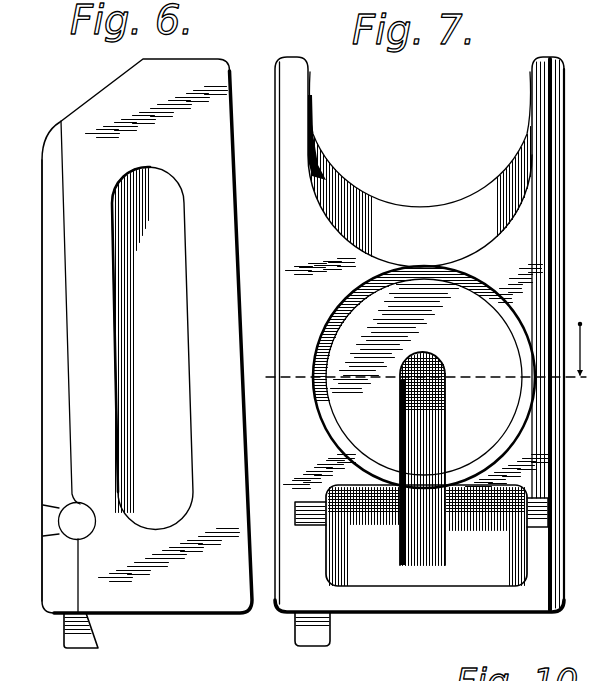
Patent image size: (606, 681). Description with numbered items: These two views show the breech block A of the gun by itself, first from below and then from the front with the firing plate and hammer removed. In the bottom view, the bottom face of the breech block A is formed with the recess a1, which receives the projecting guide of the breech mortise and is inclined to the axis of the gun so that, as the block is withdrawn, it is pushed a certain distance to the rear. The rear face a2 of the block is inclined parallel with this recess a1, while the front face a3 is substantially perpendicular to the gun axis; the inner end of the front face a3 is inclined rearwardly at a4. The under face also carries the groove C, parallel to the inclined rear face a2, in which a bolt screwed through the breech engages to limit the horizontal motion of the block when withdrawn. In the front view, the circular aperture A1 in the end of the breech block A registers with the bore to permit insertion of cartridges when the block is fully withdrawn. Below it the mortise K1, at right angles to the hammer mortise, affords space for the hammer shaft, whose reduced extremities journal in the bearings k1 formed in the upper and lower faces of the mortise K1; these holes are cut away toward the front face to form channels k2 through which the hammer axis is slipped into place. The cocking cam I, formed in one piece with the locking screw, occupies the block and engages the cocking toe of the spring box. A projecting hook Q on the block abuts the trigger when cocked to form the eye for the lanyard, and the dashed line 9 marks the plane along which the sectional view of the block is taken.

In FIG. 6, the breech block A is at (147, 336).
In FIG. 7, the breech block A is at (419, 334).
In FIG. 7, the circular aperture A1 is at (419, 164).
In FIG. 6, the recess a1 is at (62, 367).
In FIG. 6, the rear face a2 is at (240, 306).
In FIG. 7, the rear face a2 is at (553, 530).
In FIG. 6, the front face a3 is at (42, 313).
In FIG. 7, the front face a3 is at (523, 255).
In FIG. 7, the rearwardly inclined portion a4 is at (420, 224).
In FIG. 6, the groove C is at (152, 348).
In FIG. 7, the cocking cam I is at (484, 351).
In FIG. 7, the mortise K1 is at (426, 535).
In FIG. 6, the bearings k1 is at (88, 534).
In FIG. 7, the bearings k1 is at (316, 524).
In FIG. 6, the channels k2 is at (58, 521).
In FIG. 6, the projecting hook Q is at (99, 646).
In FIG. 7, the projecting hook Q is at (314, 645).
In FIG. 7, the section line 9 9 is at (427, 360).